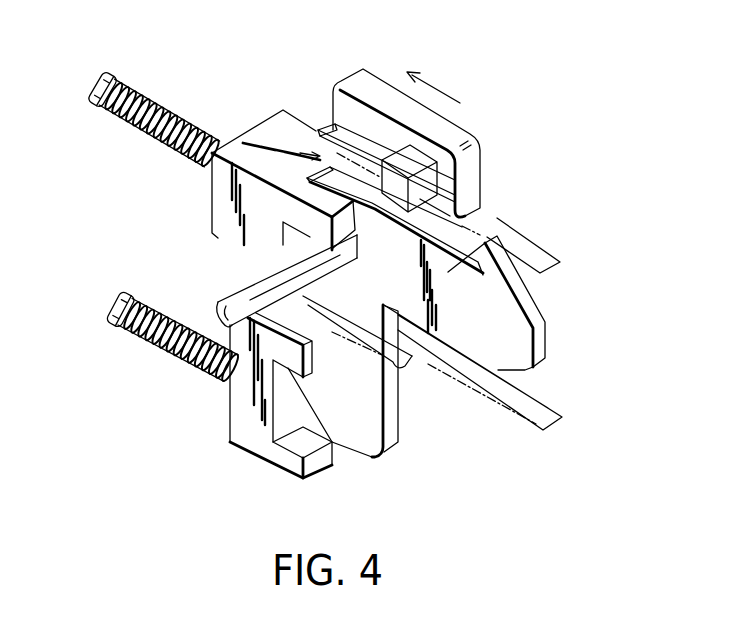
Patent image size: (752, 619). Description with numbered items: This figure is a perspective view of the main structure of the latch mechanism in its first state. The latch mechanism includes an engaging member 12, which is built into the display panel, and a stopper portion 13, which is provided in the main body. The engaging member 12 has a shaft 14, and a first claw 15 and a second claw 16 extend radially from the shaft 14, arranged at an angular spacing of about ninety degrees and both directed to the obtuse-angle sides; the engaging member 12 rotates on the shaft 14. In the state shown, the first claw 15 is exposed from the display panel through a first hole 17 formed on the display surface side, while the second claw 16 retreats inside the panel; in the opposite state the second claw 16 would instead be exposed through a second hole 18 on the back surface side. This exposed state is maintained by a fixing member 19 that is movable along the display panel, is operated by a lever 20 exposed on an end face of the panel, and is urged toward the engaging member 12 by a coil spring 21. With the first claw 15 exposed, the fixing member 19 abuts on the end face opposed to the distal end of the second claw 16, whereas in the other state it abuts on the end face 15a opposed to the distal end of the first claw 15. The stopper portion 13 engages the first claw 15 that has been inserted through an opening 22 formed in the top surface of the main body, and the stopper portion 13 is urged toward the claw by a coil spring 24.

The engaging member 12 is at (556, 307).
The stopper portion 13 is at (247, 438).
The shaft 14 is at (237, 290).
The first claw 15 is at (353, 420).
The end face 15a is at (343, 187).
The second claw 16 is at (448, 272).
The first hole 17 is at (560, 410).
The second hole 18 is at (548, 248).
The fixing member 19 is at (273, 143).
The lever 20 is at (453, 140).
The coil spring 21 is at (142, 102).
The opening 22 is at (395, 368).
The coil spring 24 is at (162, 338).